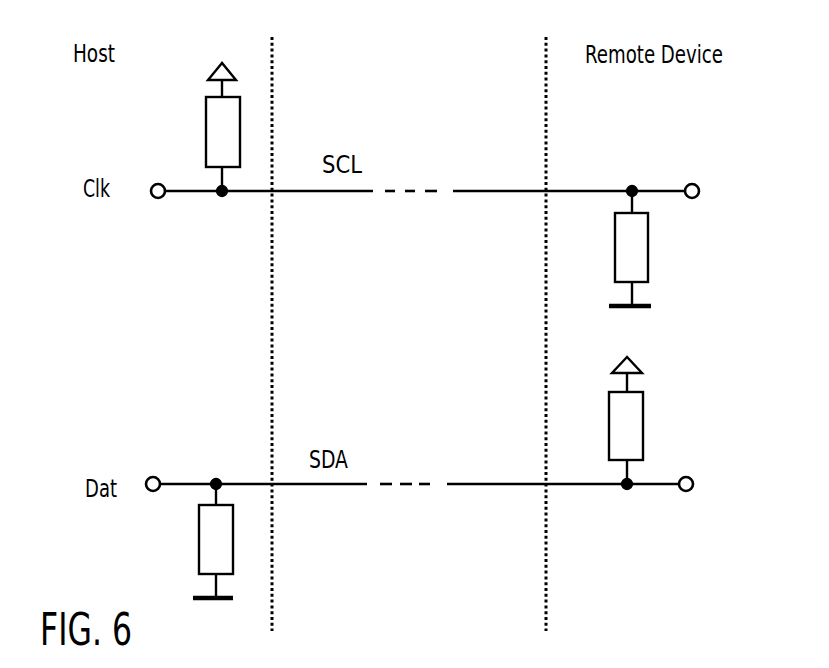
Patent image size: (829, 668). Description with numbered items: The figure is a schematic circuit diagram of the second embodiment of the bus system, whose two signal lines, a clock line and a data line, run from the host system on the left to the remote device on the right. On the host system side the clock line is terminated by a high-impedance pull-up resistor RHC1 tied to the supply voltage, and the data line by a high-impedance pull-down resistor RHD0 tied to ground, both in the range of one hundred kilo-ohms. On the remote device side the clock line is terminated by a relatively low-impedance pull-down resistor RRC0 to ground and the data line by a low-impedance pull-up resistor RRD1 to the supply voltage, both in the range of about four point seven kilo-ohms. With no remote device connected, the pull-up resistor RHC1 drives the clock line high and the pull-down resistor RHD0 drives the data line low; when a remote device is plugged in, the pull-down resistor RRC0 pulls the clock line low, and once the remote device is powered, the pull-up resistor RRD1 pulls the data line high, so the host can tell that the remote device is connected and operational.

The pull-up resistor RHC1 is at (198, 123).
The pull-down resistor RRC0 is at (656, 267).
The pull-up resistor RRD1 is at (650, 415).
The pull-down resistor RHD0 is at (193, 560).